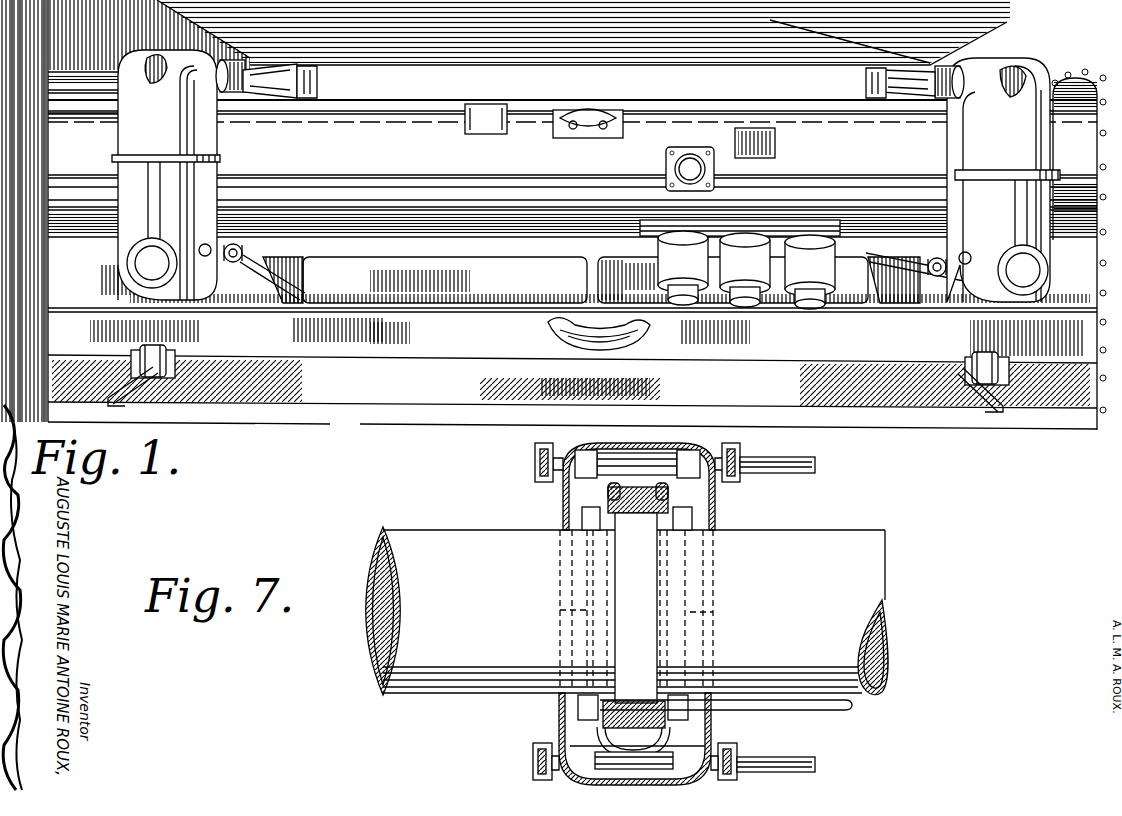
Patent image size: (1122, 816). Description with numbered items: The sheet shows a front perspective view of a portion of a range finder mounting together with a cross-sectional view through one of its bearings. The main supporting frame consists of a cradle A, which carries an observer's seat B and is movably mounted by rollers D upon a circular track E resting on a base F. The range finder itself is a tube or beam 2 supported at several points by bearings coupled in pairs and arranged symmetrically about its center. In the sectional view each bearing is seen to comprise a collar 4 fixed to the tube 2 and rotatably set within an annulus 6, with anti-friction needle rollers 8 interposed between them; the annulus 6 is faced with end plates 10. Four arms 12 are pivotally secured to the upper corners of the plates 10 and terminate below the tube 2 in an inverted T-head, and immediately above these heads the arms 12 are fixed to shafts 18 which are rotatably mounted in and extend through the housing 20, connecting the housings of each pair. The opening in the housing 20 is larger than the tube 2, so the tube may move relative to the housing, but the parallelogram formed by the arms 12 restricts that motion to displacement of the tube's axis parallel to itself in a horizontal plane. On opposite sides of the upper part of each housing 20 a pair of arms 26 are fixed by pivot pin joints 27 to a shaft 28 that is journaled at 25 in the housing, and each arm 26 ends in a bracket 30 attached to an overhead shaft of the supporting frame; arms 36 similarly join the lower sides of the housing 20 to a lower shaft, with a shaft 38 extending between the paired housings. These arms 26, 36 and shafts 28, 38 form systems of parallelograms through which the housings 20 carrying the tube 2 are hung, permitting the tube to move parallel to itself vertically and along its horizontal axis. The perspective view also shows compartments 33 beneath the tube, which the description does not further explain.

In FIG. 1, the tube or beam 2 is at (636, 112).
In FIG. 7, the tube or beam 2 is at (417, 538).
In FIG. 7, the collar 4 is at (646, 634).
In FIG. 7, the annulus 6 is at (626, 496).
In FIG. 7, the anti-friction needle rollers 8 is at (636, 608).
In FIG. 7, the end plates 10 is at (606, 491).
In FIG. 7, the arms 12 is at (582, 512).
In FIG. 1, the shafts 18 is at (107, 262).
In FIG. 7, the shafts 18 is at (838, 712).
In FIG. 1, the housing 20 is at (128, 134).
In FIG. 7, the housing 20 is at (660, 452).
In FIG. 7, the journal 25 is at (575, 462).
In FIG. 1, the arms 26 is at (274, 88).
In FIG. 7, the arms 26 is at (535, 455).
In FIG. 7, the pivot pin joints 27 is at (740, 474).
In FIG. 7, the shaft 28 is at (810, 466).
In FIG. 1, the bracket 30 is at (317, 88).
In FIG. 1, the compartment 33 is at (252, 262).
In FIG. 1, the arms 36 is at (288, 243).
In FIG. 7, the arms 36 is at (533, 770).
In FIG. 7, the shaft 38 is at (808, 762).
In FIG. 1, the cradle A is at (587, 357).
In FIG. 1, the observer's seat B is at (545, 326).
In FIG. 1, the rollers D is at (165, 348).
In FIG. 1, the circular track E is at (108, 402).
In FIG. 1, the base F is at (326, 410).